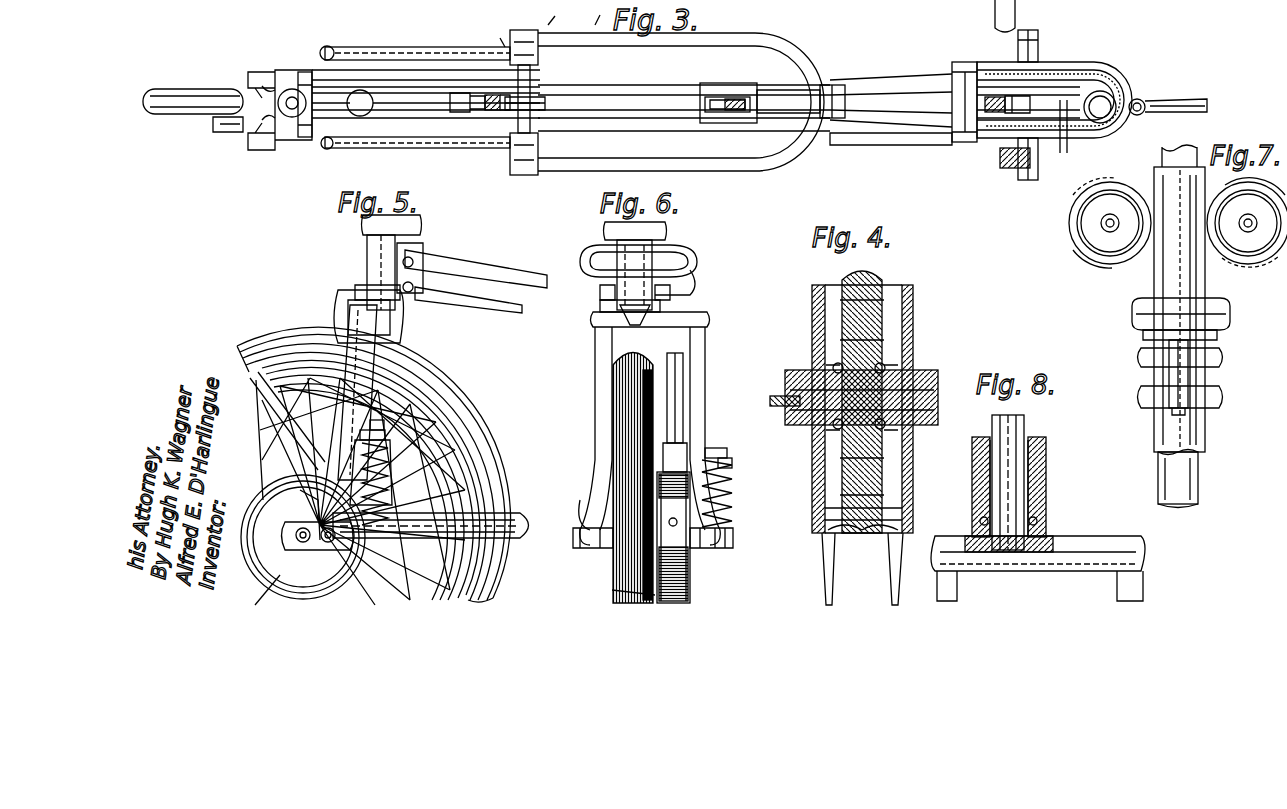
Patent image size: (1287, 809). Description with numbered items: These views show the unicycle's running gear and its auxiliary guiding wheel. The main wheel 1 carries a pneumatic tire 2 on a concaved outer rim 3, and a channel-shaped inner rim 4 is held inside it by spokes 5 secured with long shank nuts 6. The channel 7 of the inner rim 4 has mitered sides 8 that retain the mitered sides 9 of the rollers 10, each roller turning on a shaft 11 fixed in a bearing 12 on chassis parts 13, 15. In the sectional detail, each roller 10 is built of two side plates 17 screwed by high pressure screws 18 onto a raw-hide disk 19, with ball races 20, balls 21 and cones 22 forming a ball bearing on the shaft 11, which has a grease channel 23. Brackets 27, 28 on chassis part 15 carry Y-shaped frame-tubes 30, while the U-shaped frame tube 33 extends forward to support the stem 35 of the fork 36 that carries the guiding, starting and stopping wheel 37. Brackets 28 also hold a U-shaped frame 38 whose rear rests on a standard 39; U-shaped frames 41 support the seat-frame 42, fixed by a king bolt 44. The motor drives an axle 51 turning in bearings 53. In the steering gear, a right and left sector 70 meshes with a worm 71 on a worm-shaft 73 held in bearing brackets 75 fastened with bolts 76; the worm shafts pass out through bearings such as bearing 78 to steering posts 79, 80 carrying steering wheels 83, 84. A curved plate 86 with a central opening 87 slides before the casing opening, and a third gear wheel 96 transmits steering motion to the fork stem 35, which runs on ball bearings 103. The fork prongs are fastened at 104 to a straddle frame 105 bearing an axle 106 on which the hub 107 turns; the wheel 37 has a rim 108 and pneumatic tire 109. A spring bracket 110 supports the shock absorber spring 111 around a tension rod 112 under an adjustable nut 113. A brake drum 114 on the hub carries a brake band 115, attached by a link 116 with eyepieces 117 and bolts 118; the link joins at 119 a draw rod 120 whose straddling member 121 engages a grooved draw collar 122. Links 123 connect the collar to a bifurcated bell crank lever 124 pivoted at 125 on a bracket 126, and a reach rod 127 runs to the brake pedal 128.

In FIG. 3, the wheel 1 is at (582, 94).
In FIG. 7, the wheel 1 is at (1165, 480).
In FIG. 3, the treaded pneumatic tire 2 is at (360, 90).
In FIG. 3, the concaved outer rim 3 is at (385, 92).
In FIG. 3, the inner rim 4 is at (1000, 97).
In FIG. 4, the inner rim 4 is at (823, 560).
In FIG. 3, the spokes 5 is at (1062, 138).
In FIG. 4, the spokes 5 is at (888, 585).
In FIG. 6, the spokes 5 is at (600, 548).
In FIG. 3, the shank nuts 6 is at (1000, 132).
In FIG. 4, the shank nuts 6 is at (845, 542).
In FIG. 4, the channel 7 is at (835, 507).
In FIG. 4, the mitered sides 8 is at (888, 528).
In FIG. 6, the mitered sides 8 is at (635, 266).
In FIG. 5, the mitered sides 8 is at (367, 255).
In FIG. 4, the mitered sides of rollers 9 is at (890, 520).
In FIG. 3, the rollers 10 is at (705, 98).
In FIG. 4, the rollers 10 is at (885, 278).
In FIG. 4, the shaft 11 is at (945, 385).
In FIG. 3, the bearing 12 is at (735, 99).
In FIG. 4, the bearing 12 is at (940, 372).
In FIG. 3, the chassis part 13 is at (935, 135).
In FIG. 3, the chassis part 15 is at (530, 90).
In FIG. 3, the side plates 17 is at (785, 118).
In FIG. 4, the side plates 17 is at (838, 318).
In FIG. 4, the high pressure screws 18 is at (840, 300).
In FIG. 4, the raw-hide disk 19 is at (855, 275).
In FIG. 4, the ball races 20 is at (835, 365).
In FIG. 4, the balls 21 is at (895, 365).
In FIG. 4, the cones 22 is at (930, 370).
In FIG. 4, the grease channel 23 is at (790, 425).
In FIG. 4, the bracket 27 is at (790, 400).
In FIG. 3, the bracket 28 is at (522, 30).
In FIG. 3, the Y-shaped frame-tubes 30 is at (327, 46).
In FIG. 3, the U-shaped frame tube 33 is at (305, 72).
In FIG. 6, the U-shaped frame tube 33 is at (600, 296).
In FIG. 5, the U-shaped frame tube 33 is at (523, 298).
In FIG. 8, the stem of fork 35 is at (1012, 440).
In FIG. 3, the fork 36 is at (262, 72).
In FIG. 8, the fork 36 is at (960, 588).
In FIG. 6, the fork 36 is at (700, 352).
In FIG. 5, the fork 36 is at (372, 368).
In FIG. 3, the auxiliary wheel 37 is at (180, 116).
In FIG. 8, the auxiliary wheel 37 is at (1046, 472).
In FIG. 6, the auxiliary wheel 37 is at (640, 260).
In FIG. 5, the auxiliary wheel 37 is at (367, 248).
In FIG. 3, the U-shaped frame 38 is at (802, 57).
In FIG. 3, the standard 39 is at (838, 85).
In FIG. 7, the U-shaped frames 41 is at (1219, 396).
In FIG. 3, the seat-frame 42 is at (1185, 101).
In FIG. 7, the seat-frame 42 is at (1169, 375).
In FIG. 3, the king bolt 44 is at (1142, 100).
In FIG. 3, the axle 51 is at (500, 38).
In FIG. 3, the bearings 53 is at (601, 12).
In FIG. 3, the right and left sector 70 is at (952, 66).
In FIG. 3, the worm 71 is at (1108, 66).
In FIG. 7, the worm-shaft 73 is at (1181, 319).
In FIG. 3, the bearing brackets 75 is at (1112, 132).
In FIG. 7, the bearing brackets 75 is at (1178, 266).
In FIG. 3, the bolts 76 is at (1038, 50).
In FIG. 3, the bearing 78 is at (771, 10).
In FIG. 3, the steering post 79 is at (559, 12).
In FIG. 7, the steering post 79 is at (1255, 235).
In FIG. 7, the steering post 80 is at (1102, 222).
In FIG. 7, the steering wheel 83 is at (1248, 252).
In FIG. 7, the steering wheel 84 is at (1068, 235).
In FIG. 3, the curved plate 86 is at (866, 6).
In FIG. 3, the central opening 87 is at (995, 14).
In FIG. 3, the third gear wheel 96 is at (1015, 158).
In FIG. 8, the ball bearings 103 is at (1038, 522).
In FIG. 6, the fastening 104 is at (575, 528).
In FIG. 5, the fastening 104 is at (335, 550).
In FIG. 5, the straddle frame 105 is at (505, 543).
In FIG. 6, the axle 106 is at (590, 500).
In FIG. 5, the axle 106 is at (298, 540).
In FIG. 6, the hub 107 is at (685, 575).
In FIG. 5, the hub 107 is at (498, 578).
In FIG. 5, the rim 108 is at (442, 437).
In FIG. 6, the pneumatic tire 109 is at (625, 378).
In FIG. 5, the pneumatic tire 109 is at (472, 442).
In FIG. 6, the shock absorber spring bracket 110 is at (727, 540).
In FIG. 5, the shock absorber spring bracket 110 is at (405, 545).
In FIG. 6, the shock absorber spring 111 is at (730, 482).
In FIG. 5, the shock absorber spring 111 is at (385, 480).
In FIG. 6, the tension rod 112 is at (718, 448).
In FIG. 5, the tension rod 112 is at (385, 438).
In FIG. 6, the adjustable nut 113 is at (732, 460).
In FIG. 5, the adjustable nut 113 is at (382, 422).
In FIG. 6, the brake drum 114 is at (620, 595).
In FIG. 5, the brake drum 114 is at (280, 577).
In FIG. 6, the brake band 115 is at (690, 555).
In FIG. 5, the brake band 115 is at (245, 497).
In FIG. 5, the link 116 is at (298, 340).
In FIG. 5, the eyepieces 117 is at (268, 452).
In FIG. 5, the bolts 118 is at (262, 437).
In FIG. 5, the attachment point 119 is at (315, 495).
In FIG. 6, the draw rod 120 is at (682, 380).
In FIG. 5, the draw rod 120 is at (395, 448).
In FIG. 6, the straddling member 121 is at (600, 310).
In FIG. 5, the straddling member 121 is at (338, 305).
In FIG. 6, the grooved draw collar 122 is at (680, 312).
In FIG. 5, the grooved draw collar 122 is at (360, 288).
In FIG. 6, the links 123 is at (598, 308).
In FIG. 5, the links 123 is at (368, 272).
In FIG. 5, the bifurcated bell crank lever 124 is at (410, 292).
In FIG. 5, the pivot 125 is at (455, 300).
In FIG. 6, the bracket 126 is at (582, 250).
In FIG. 5, the bracket 126 is at (425, 245).
In FIG. 6, the reach rod 127 is at (554, 249).
In FIG. 5, the reach rod 127 is at (505, 268).
In FIG. 4, the brake pedal 128 is at (968, 239).
In FIG. 6, the brake pedal 128 is at (700, 280).